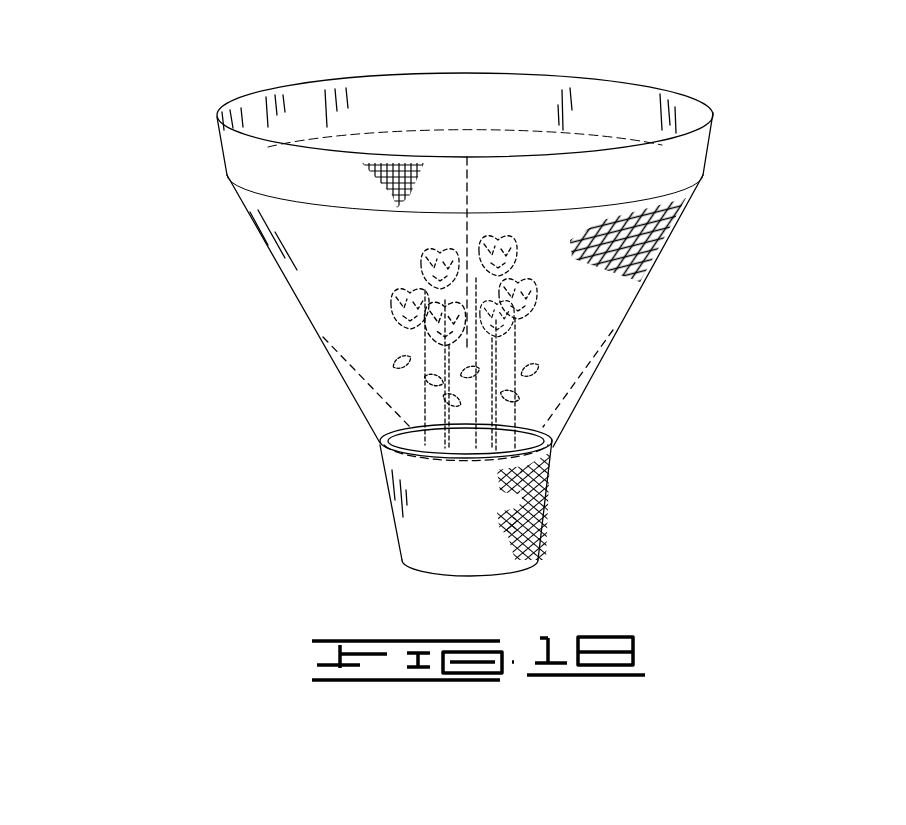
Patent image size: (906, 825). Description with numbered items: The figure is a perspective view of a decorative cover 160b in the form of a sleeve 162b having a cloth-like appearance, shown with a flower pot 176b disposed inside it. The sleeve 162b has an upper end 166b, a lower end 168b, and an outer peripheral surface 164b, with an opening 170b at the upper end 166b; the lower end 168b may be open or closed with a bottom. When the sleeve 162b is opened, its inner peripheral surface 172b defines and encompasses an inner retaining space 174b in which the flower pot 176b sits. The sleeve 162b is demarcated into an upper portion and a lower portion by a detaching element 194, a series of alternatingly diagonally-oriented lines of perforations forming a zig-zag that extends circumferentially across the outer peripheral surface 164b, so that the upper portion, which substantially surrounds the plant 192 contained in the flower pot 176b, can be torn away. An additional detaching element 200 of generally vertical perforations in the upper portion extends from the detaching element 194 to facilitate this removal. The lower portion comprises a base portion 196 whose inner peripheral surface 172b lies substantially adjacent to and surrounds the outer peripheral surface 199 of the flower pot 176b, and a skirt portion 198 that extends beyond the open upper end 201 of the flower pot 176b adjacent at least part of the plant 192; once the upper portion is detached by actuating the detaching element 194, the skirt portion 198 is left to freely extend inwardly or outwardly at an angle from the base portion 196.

The decorative cover 160b is at (448, 310).
The sleeve 162b is at (390, 82).
The outer peripheral surface 164b is at (262, 244).
The upper end 166b is at (357, 77).
The lower end 168b is at (503, 578).
The opening 170b is at (627, 108).
The inner peripheral surface 172b is at (292, 107).
The inner retaining space 174b is at (487, 98).
The flower pot 176b is at (548, 470).
The plant 192 is at (552, 297).
The detaching element 194 is at (370, 383).
The base portion 196 is at (584, 500).
The skirt portion 198 is at (592, 368).
The outer peripheral surface of the flower pot 199 is at (417, 543).
The additional detaching element 200 is at (467, 195).
The open upper end of the flower pot 201 is at (567, 417).